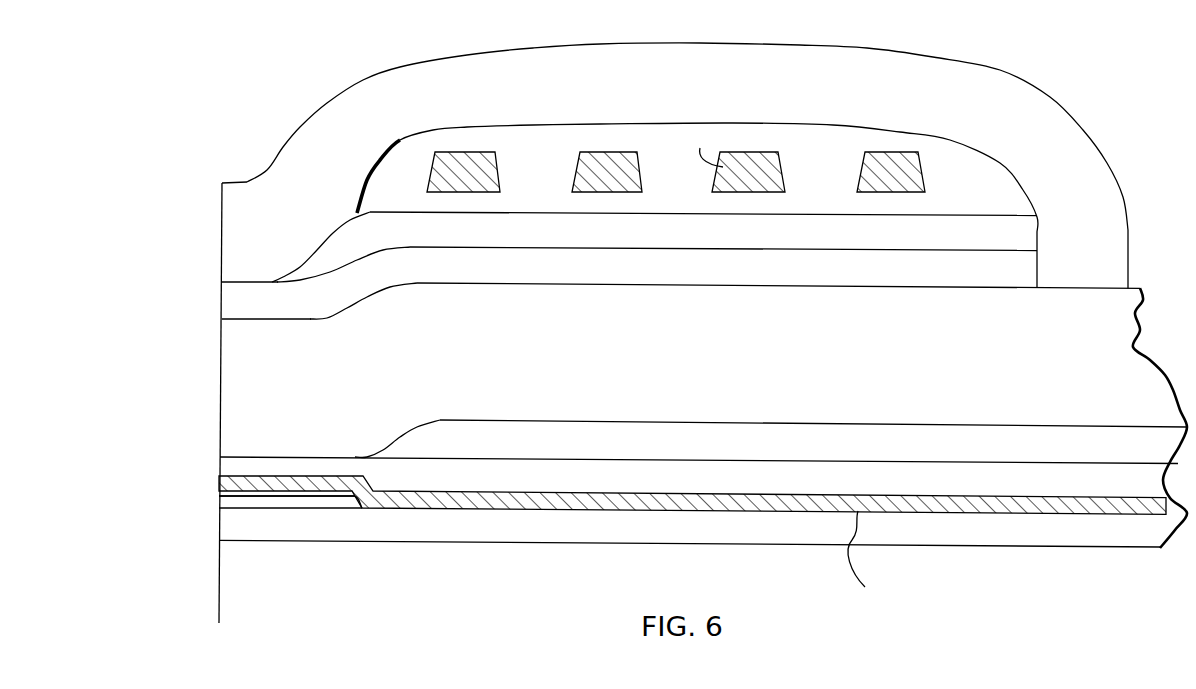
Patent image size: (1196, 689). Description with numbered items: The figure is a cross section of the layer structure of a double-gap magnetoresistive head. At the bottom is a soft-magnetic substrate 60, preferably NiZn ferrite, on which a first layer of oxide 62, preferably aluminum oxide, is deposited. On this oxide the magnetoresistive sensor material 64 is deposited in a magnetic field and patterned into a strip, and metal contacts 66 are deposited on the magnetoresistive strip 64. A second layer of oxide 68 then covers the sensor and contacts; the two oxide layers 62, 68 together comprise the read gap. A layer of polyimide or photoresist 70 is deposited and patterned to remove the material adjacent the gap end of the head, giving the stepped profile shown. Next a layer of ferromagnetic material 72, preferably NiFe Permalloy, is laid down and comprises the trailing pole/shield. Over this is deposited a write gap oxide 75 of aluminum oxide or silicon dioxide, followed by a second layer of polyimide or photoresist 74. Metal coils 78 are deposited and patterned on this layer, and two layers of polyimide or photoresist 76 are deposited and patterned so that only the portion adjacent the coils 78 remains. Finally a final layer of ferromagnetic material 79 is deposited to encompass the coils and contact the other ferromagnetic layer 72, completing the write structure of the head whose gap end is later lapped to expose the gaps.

The soft-magnetic substrate 60 is at (227, 575).
The oxide layer 62 is at (222, 523).
The magnetoresistive sensor material 64 is at (221, 497).
The metal contacts 66 is at (220, 483).
The second oxide layer 68 is at (228, 466).
The polyimide or photoresist layer 70 is at (485, 438).
The ferromagnetic layer 72 is at (226, 372).
The second polyimide or photoresist layer 74 is at (325, 258).
The write gap oxide 75 is at (230, 302).
The polyimide or photoresist layers 76 is at (400, 177).
The metal coils 78 is at (468, 158).
The final ferromagnetic layer 79 is at (363, 80).